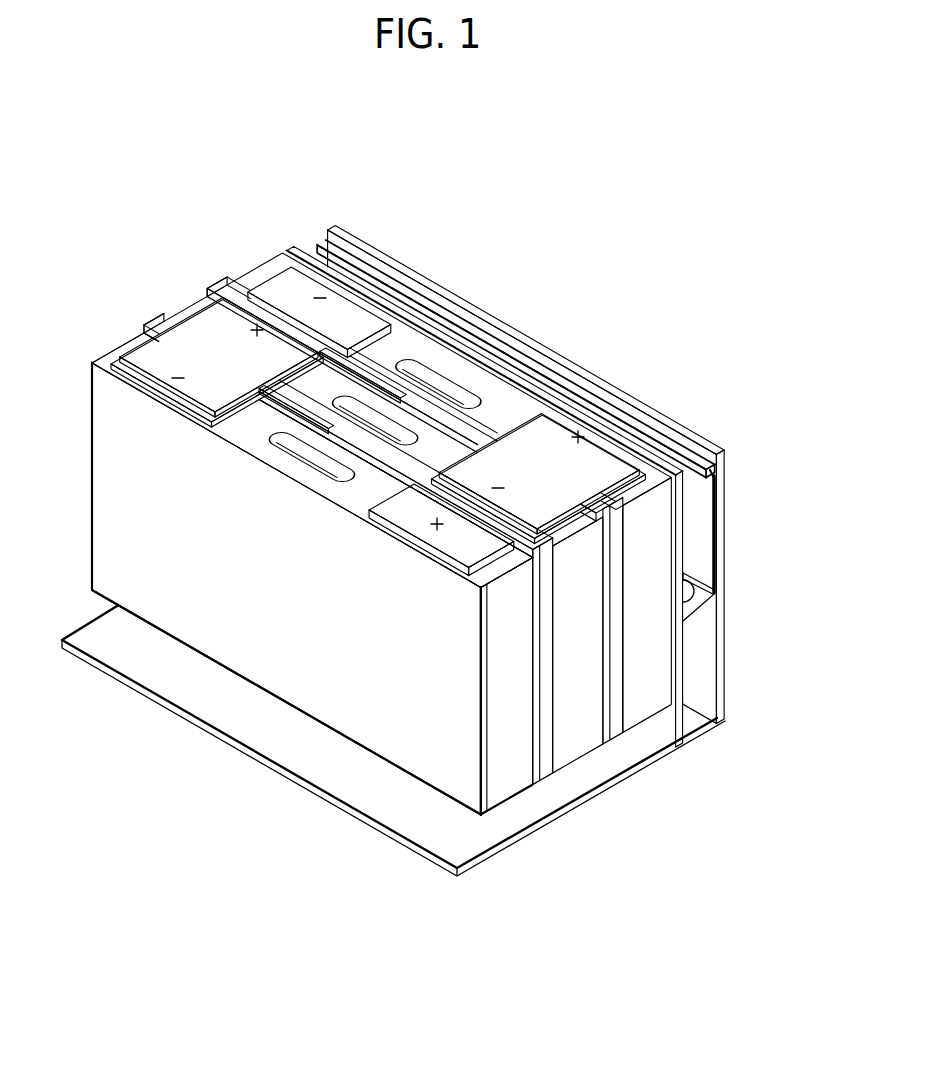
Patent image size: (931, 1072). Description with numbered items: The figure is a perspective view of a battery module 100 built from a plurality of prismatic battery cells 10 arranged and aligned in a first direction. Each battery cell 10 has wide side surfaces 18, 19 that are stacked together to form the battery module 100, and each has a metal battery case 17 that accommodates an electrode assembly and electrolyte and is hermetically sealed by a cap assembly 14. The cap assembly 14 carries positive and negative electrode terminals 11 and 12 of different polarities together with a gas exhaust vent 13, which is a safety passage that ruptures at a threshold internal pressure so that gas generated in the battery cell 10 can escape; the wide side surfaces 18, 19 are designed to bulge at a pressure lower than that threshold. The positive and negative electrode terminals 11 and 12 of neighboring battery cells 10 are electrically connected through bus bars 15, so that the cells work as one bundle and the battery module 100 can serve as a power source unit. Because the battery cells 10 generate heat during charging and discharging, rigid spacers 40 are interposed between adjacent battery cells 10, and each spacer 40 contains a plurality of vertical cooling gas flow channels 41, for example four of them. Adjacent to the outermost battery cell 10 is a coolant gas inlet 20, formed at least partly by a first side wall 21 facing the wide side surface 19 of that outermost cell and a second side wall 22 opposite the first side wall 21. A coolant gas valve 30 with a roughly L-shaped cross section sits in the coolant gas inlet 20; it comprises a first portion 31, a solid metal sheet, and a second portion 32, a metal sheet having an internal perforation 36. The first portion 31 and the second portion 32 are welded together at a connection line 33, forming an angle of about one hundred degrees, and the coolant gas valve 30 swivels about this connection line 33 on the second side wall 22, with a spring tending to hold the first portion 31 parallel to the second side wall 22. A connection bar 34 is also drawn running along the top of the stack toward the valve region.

The battery module 100 is at (143, 230).
The battery cell 10 is at (141, 551).
The positive electrode terminal 11 is at (463, 555).
The negative electrode terminal 12 is at (288, 288).
The gas exhaust vent 13 is at (312, 472).
The cap assembly 14 is at (243, 438).
The bus bar 15 is at (216, 322).
The battery case 17 is at (507, 775).
The side surface 18 is at (243, 648).
The side surface 19 is at (537, 755).
The coolant gas inlet 20 is at (418, 551).
The first side wall 21 is at (682, 732).
The second side wall 22 is at (532, 333).
The coolant gas valve 30 is at (734, 561).
The first portion 31 is at (700, 528).
The second portion 32 is at (702, 592).
The connection line 33 is at (697, 575).
The connection bar 34 is at (413, 300).
The internal perforation 36 is at (687, 597).
The spacer 40 is at (610, 722).
The vertical cooling gas flow channel 41 is at (360, 363).